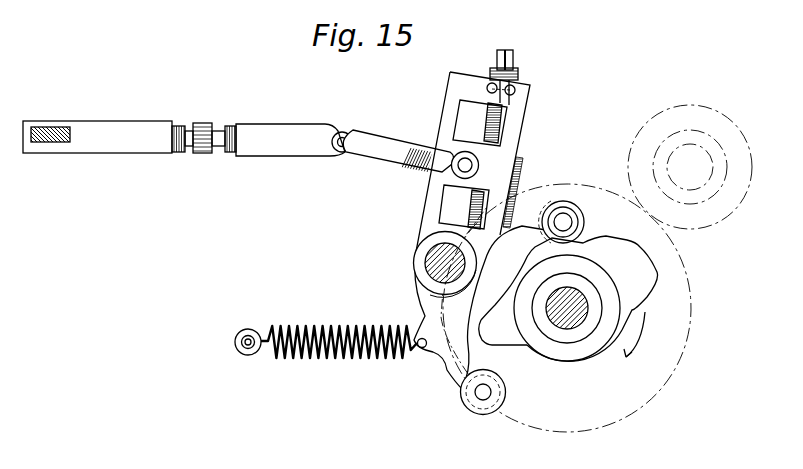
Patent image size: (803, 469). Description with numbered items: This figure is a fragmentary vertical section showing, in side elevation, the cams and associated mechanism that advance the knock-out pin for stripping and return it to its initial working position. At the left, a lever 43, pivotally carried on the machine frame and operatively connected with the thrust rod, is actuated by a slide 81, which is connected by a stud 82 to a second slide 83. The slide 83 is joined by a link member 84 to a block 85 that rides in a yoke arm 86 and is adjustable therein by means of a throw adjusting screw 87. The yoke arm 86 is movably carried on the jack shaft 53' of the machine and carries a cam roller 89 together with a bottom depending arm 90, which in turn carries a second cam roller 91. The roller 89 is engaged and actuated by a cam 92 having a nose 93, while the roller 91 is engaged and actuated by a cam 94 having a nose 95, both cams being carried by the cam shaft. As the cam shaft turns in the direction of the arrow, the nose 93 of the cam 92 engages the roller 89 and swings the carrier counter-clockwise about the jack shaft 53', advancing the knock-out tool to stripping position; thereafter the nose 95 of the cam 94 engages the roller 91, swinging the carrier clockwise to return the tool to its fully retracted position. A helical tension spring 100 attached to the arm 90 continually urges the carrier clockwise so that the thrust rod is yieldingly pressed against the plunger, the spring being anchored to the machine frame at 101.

The lever 43 is at (52, 125).
The slide 81 is at (119, 135).
The stud 82 is at (201, 125).
The second slide 83 is at (264, 128).
The link member 84 is at (370, 143).
The block 85 is at (460, 148).
The yoke arm 86 is at (467, 85).
The throw adjusting screw 87 is at (514, 56).
The cam roller 89 is at (584, 207).
The jack shaft 53' is at (417, 265).
The bottom depending arm 90 is at (430, 303).
The second cam roller 91 is at (479, 406).
The cam 92 is at (607, 353).
The nose 93 is at (648, 285).
The cam 94 is at (564, 352).
The nose 95 is at (497, 337).
The helical tension spring 100 is at (335, 360).
The spring attachment point 101 is at (240, 349).